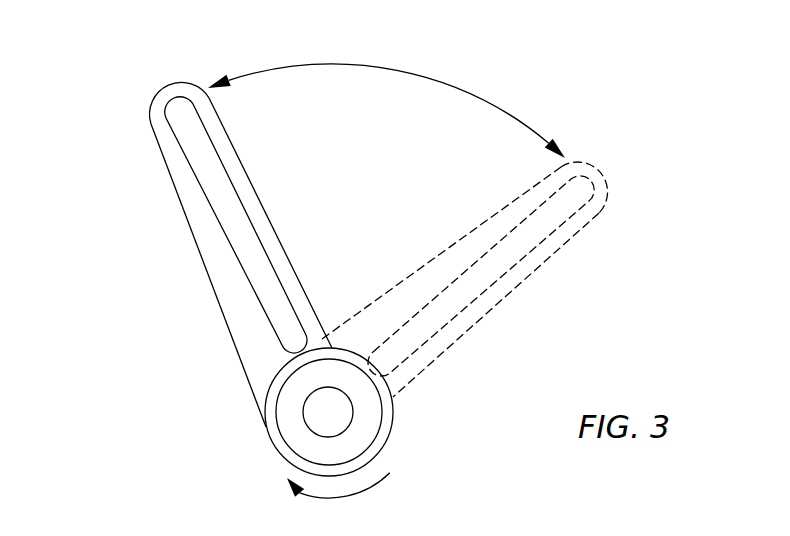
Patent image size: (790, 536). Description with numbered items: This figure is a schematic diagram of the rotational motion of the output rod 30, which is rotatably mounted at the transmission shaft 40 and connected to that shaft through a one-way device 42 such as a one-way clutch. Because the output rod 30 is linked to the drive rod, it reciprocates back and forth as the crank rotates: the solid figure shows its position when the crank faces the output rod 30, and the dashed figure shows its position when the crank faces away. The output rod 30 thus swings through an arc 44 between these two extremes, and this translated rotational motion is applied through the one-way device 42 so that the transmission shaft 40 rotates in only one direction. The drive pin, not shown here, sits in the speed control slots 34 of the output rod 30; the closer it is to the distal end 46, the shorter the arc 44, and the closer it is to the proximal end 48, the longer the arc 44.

The output rod 30 is at (132, 131).
The speed control slots 34 is at (234, 249).
The transmission shaft 40 is at (328, 417).
The one-way device 42 is at (355, 435).
The arc 44 is at (392, 70).
The distal end 46 is at (165, 83).
The proximal end 48 is at (265, 424).